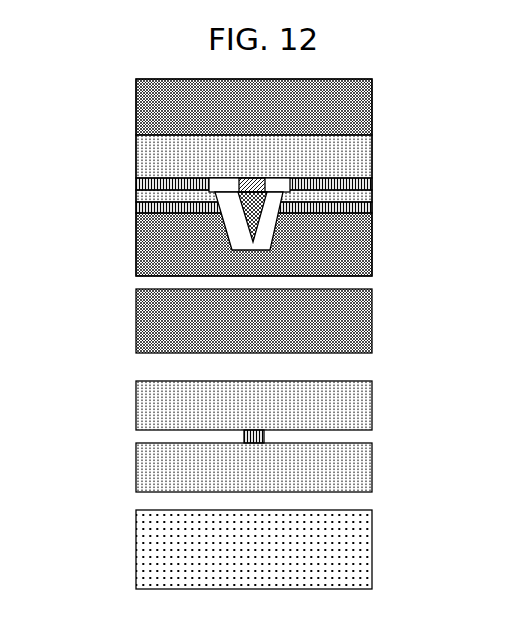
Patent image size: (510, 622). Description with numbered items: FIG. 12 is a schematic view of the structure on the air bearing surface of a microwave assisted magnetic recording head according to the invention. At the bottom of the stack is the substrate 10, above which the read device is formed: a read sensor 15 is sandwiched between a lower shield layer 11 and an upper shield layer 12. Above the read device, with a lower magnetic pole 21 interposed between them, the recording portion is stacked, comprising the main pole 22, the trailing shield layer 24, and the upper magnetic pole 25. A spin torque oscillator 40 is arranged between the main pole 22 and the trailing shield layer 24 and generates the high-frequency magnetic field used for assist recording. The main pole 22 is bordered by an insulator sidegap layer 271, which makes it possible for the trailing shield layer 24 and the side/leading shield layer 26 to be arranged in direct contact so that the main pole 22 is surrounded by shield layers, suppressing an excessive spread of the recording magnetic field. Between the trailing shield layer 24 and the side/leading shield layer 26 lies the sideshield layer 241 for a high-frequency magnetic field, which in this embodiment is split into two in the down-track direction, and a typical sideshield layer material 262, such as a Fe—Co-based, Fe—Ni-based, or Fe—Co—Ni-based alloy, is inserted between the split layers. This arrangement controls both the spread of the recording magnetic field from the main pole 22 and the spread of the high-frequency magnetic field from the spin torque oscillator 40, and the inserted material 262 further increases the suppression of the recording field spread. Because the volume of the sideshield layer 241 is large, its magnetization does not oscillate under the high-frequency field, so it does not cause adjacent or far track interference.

The substrate 10 is at (373, 545).
The lower shield layer 11 is at (373, 468).
The upper shield layer 12 is at (373, 400).
The read sensor 15 is at (264, 437).
The lower magnetic pole 21 is at (373, 320).
The main pole 22 is at (230, 222).
The trailing shield layer 24 is at (372, 140).
The upper magnetic pole 25 is at (372, 105).
The side/leading shield layer 26 is at (372, 256).
The spin torque oscillator 40 is at (262, 179).
The sideshield layer for a high-frequency magnetic field 241 is at (372, 182).
The sideshield layer material 262 is at (136, 192).
The insulator sidegap layer 271 is at (272, 228).